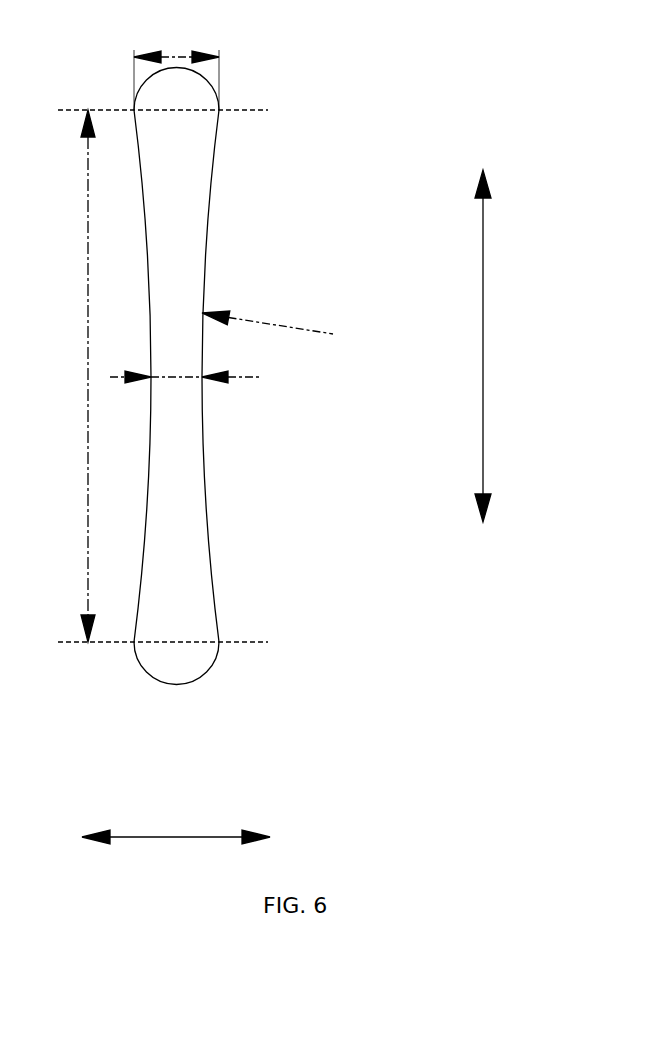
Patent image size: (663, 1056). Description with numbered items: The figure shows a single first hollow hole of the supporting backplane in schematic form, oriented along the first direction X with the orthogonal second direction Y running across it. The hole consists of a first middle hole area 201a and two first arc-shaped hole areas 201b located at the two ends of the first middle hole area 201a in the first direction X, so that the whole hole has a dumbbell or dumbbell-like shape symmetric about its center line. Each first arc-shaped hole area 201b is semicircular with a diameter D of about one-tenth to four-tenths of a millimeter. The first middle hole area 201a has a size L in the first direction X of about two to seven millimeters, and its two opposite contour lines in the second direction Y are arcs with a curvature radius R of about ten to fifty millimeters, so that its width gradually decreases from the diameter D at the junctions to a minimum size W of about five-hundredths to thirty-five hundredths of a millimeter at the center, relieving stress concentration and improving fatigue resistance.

The first middle hole area 201a is at (283, 468).
The first arc-shaped hole area 201b is at (268, 64).
The size of the first middle hole area in the first direction L is at (71, 376).
The diameter of the first arc-shaped hole area D is at (176, 68).
The minimum size of the first middle hole area in the second direction W is at (186, 366).
The curvature radius of the arc-shaped contour line R is at (267, 315).
The first direction X is at (506, 346).
The second direction Y is at (176, 825).